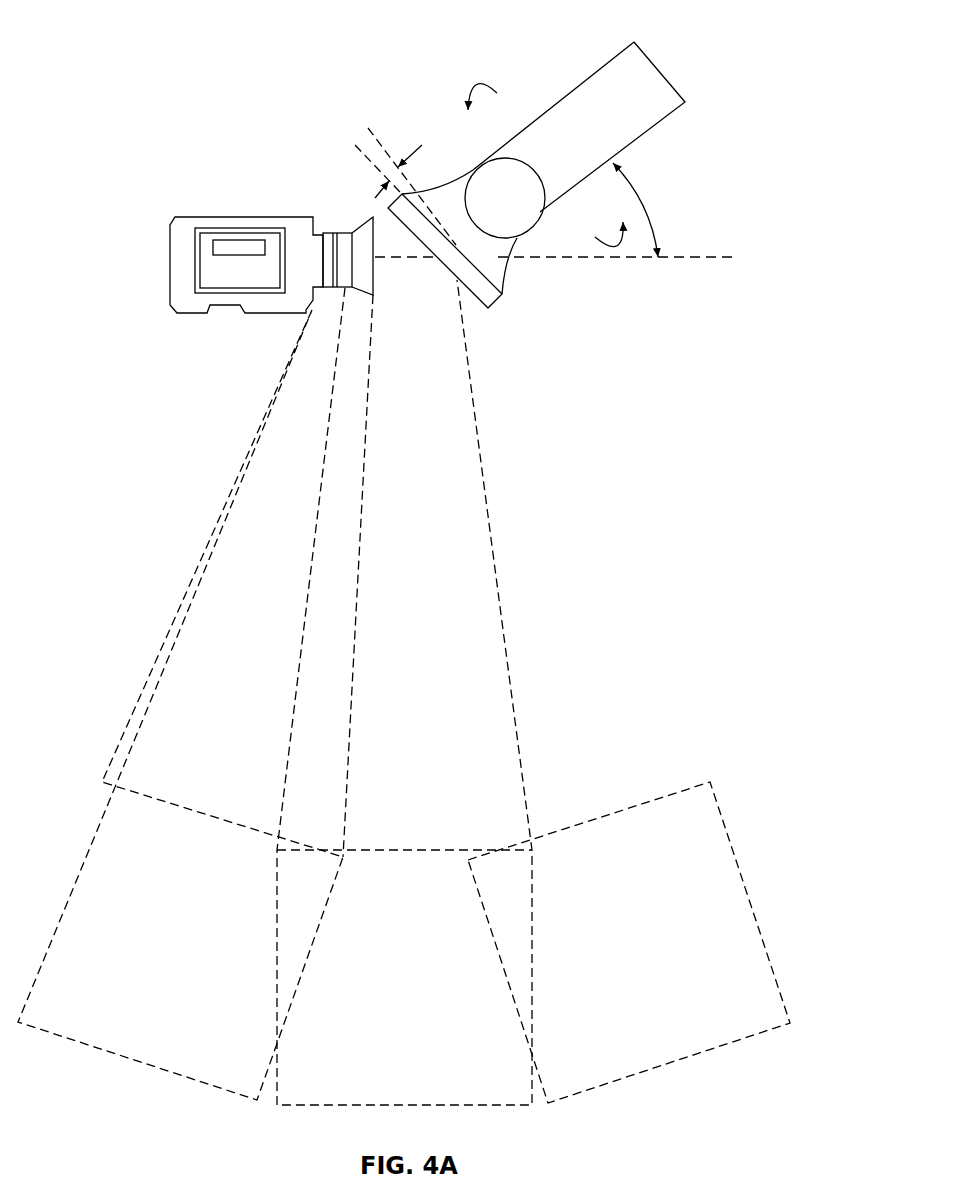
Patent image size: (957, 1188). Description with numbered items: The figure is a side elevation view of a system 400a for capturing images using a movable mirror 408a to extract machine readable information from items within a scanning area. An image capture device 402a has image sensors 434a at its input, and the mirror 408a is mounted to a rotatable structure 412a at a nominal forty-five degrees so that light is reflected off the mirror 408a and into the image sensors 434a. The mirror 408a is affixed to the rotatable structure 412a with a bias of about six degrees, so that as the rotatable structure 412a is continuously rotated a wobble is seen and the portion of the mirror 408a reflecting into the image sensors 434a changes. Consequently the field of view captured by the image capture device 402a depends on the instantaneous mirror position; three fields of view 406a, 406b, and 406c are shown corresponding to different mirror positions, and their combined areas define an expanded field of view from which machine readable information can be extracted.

The system for capturing images using a movable mirror 400a is at (126, 31).
The image capture device 402a is at (197, 216).
The image sensors 434a is at (376, 288).
The rotatable structure 412a is at (592, 75).
The mirror 408a is at (499, 301).
The field of view 406a is at (155, 802).
The field of view 406b is at (387, 850).
The field of view 406c is at (722, 817).